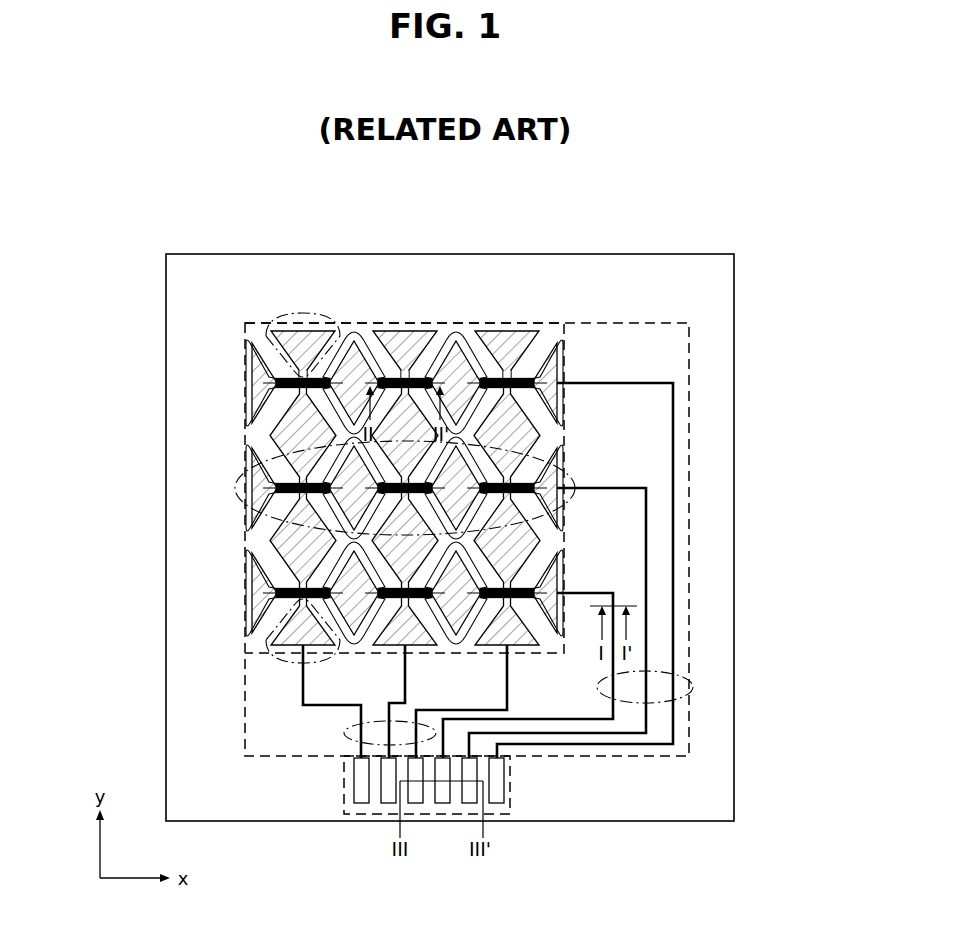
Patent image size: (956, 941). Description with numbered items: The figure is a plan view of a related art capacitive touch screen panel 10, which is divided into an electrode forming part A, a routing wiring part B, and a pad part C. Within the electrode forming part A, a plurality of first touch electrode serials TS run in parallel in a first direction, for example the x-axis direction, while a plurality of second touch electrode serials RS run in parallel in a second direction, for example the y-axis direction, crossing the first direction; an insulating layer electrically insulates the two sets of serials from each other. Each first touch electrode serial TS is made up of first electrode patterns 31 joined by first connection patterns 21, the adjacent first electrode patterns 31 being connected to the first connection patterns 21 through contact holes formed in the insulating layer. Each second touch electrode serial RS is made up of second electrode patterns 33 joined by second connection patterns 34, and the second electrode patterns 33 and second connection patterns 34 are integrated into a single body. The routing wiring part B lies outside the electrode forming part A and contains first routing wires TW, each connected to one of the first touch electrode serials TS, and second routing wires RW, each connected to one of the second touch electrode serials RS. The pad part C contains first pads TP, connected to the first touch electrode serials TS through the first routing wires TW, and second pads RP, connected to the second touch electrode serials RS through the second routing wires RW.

The touch screen panel 10 is at (722, 316).
The first connection pattern 21 is at (329, 350).
The first electrode pattern 31 is at (358, 345).
The second electrode pattern 33 is at (305, 332).
The second connection pattern 34 is at (270, 360).
The second touch electrode serial RS is at (283, 316).
The first touch electrode serial TS is at (236, 487).
The first routing wire TW is at (696, 689).
The second routing wire RW is at (345, 737).
The second pad RP is at (362, 807).
The first pad TP is at (443, 807).
The electrode forming part A is at (232, 571).
The routing wiring part B is at (232, 712).
The pad part C is at (518, 800).